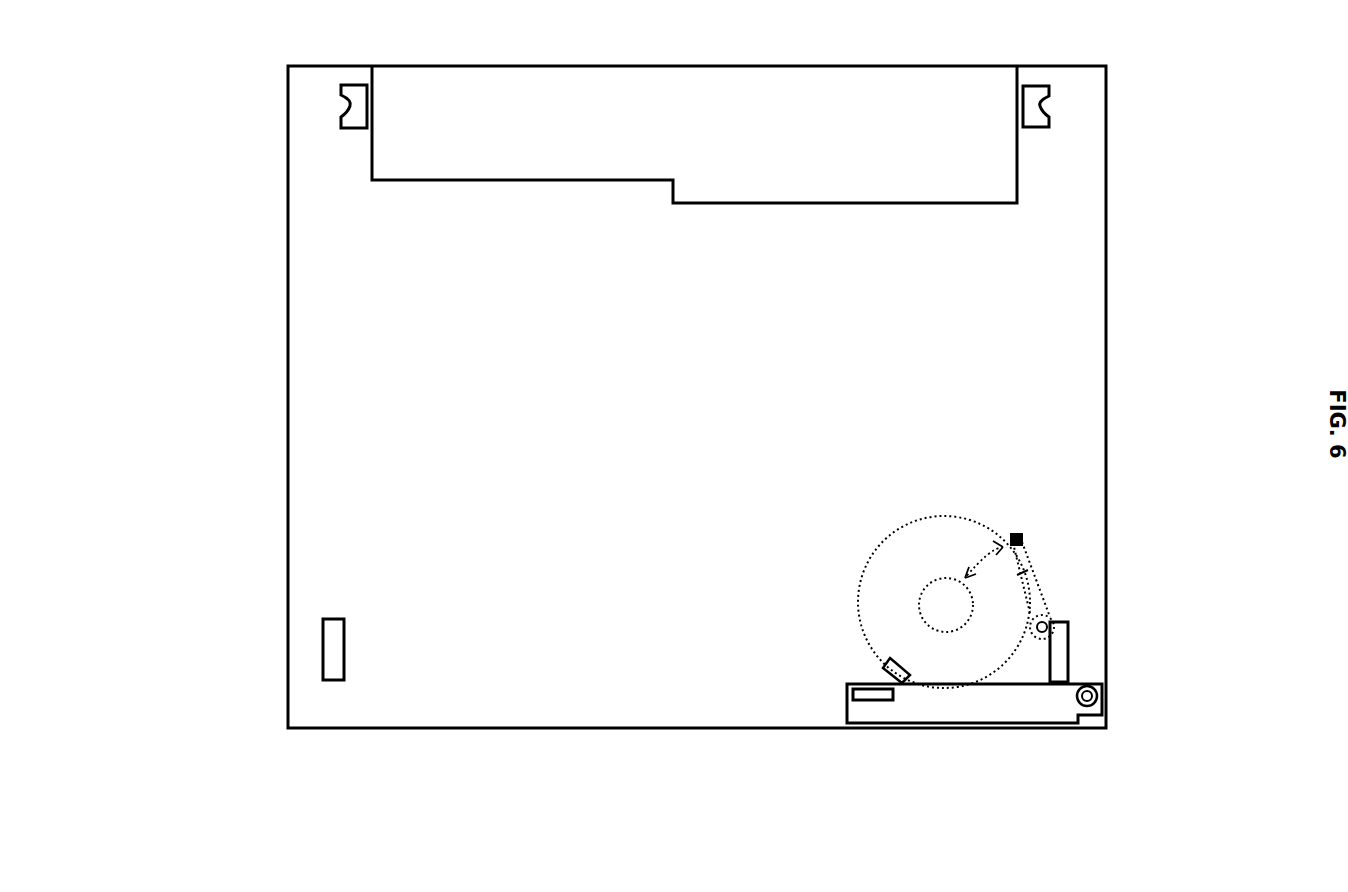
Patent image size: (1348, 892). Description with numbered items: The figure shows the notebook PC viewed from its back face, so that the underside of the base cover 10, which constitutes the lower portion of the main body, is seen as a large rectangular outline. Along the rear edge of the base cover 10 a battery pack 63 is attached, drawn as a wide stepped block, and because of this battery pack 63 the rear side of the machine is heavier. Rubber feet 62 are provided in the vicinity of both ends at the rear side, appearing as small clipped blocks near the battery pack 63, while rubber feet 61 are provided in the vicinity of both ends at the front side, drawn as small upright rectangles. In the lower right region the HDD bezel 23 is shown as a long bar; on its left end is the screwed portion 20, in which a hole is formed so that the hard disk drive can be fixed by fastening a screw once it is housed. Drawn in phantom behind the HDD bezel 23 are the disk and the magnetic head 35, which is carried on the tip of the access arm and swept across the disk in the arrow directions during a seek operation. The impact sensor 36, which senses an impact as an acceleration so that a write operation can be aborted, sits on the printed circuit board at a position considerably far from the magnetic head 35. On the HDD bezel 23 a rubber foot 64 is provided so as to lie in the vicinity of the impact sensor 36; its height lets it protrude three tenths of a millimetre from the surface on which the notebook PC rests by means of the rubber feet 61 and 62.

The base cover 10 is at (287, 373).
The screwed portion 20 is at (1087, 706).
The HDD bezel 23 is at (922, 717).
The magnetic head 35 is at (1013, 537).
The impact sensor 36 is at (883, 670).
The rubber feet 61 is at (323, 653).
The rubber feet 62 is at (345, 115).
The battery pack 63 is at (1018, 187).
The rubber foot 64 is at (873, 700).